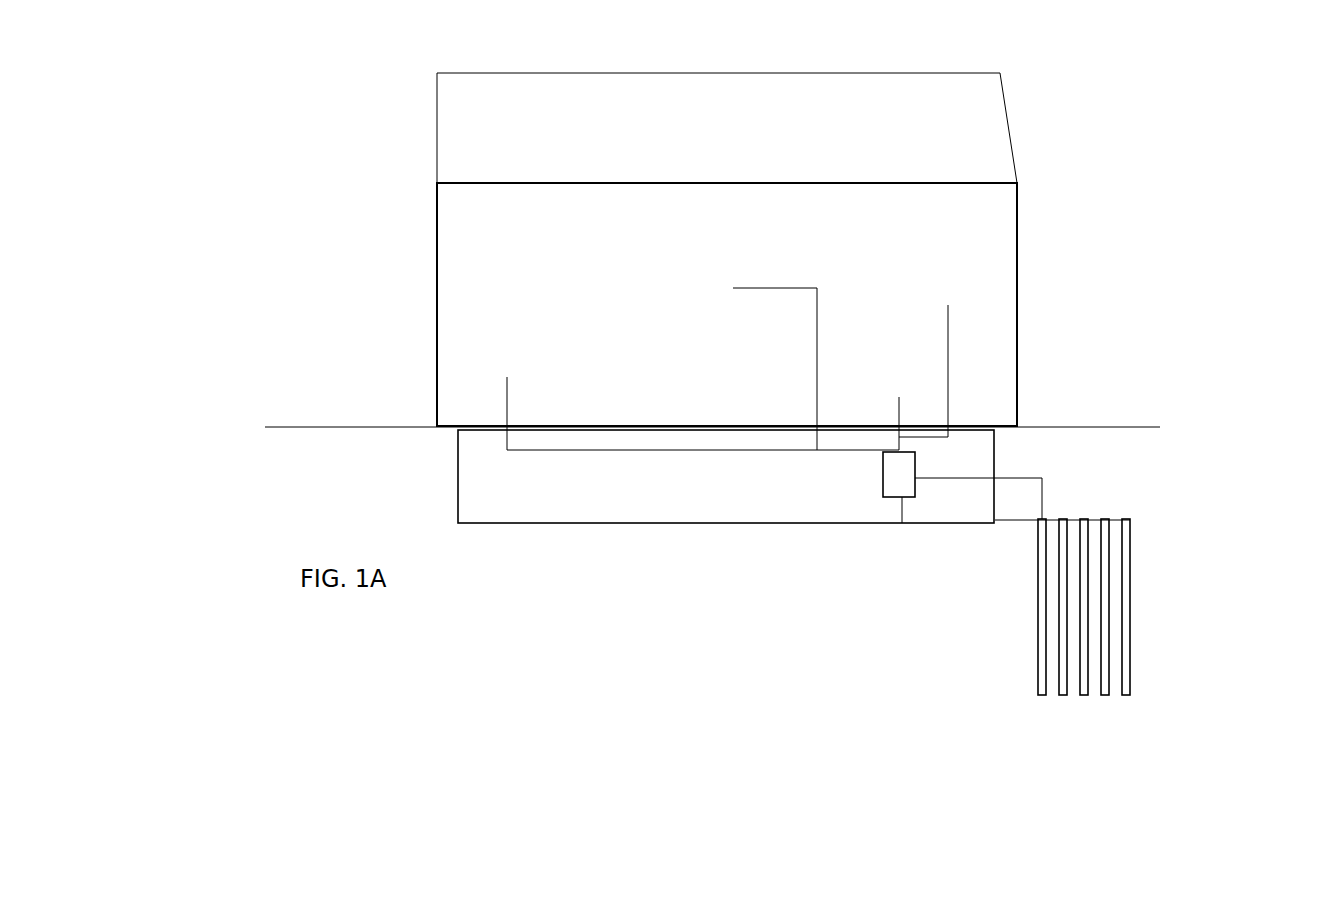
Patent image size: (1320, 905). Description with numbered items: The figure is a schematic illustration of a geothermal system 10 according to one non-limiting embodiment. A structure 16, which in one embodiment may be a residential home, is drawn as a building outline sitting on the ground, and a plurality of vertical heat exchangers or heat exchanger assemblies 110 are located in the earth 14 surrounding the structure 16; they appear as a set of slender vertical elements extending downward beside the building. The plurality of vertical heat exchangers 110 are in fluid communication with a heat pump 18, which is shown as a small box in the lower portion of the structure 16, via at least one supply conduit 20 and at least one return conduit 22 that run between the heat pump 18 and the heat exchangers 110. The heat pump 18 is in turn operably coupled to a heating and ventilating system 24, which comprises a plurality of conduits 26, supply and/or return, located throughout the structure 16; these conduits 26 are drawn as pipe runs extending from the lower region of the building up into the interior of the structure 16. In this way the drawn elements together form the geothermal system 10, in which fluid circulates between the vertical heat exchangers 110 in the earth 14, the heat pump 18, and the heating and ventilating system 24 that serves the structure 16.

The geothermal system 10 is at (1060, 387).
The earth 14 is at (1123, 489).
The structure 16 is at (435, 227).
The heat pump 18 is at (883, 473).
The supply conduit 20 is at (1015, 522).
The return conduit 22 is at (1007, 474).
The heating and ventilating system 24 is at (833, 470).
The conduits 26 is at (948, 356).
The vertical heat exchangers 110 is at (1047, 547).